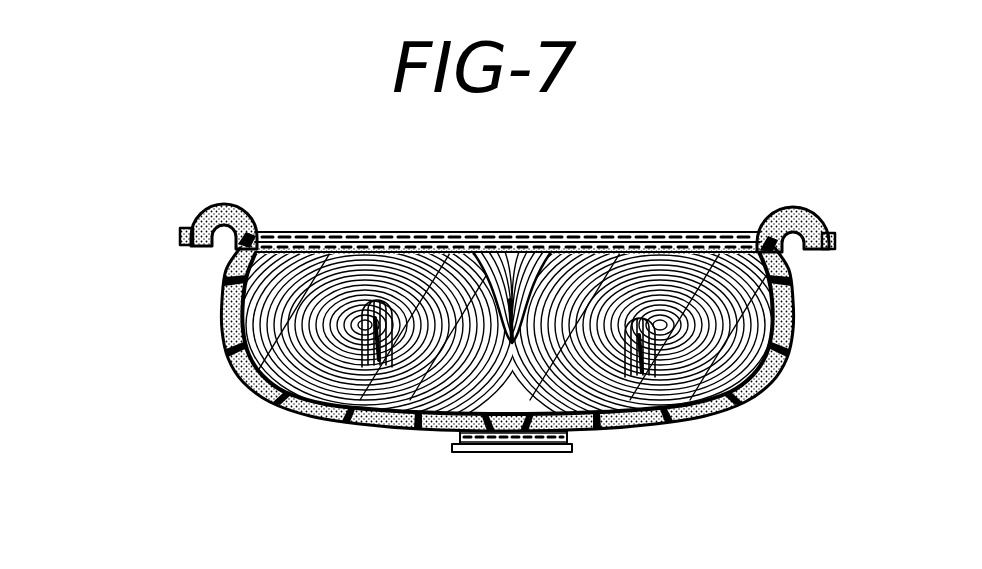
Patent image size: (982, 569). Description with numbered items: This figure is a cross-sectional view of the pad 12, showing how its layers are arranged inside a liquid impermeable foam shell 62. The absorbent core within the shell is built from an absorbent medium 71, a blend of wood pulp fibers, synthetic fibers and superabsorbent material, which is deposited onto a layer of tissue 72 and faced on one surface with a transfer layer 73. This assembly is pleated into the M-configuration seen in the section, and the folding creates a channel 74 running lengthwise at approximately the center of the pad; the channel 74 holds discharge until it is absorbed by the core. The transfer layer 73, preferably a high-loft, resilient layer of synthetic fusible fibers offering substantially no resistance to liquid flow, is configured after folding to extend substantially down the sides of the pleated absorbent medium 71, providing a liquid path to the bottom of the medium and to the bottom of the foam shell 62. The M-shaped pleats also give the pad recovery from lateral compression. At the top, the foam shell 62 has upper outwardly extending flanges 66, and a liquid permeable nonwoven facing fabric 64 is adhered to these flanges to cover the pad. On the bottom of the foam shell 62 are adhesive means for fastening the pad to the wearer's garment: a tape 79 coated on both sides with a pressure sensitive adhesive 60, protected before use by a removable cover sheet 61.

The pad 12 is at (148, 195).
The pressure sensitive adhesive 60 is at (447, 435).
The removable cover sheet 61 is at (467, 455).
The liquid impermeable foam shell 62 is at (700, 420).
The liquid permeable nonwoven facing fabric 64 is at (392, 232).
The upper outwardly extending flanges 66 is at (226, 203).
The absorbent medium 71 is at (273, 324).
The layer of tissue 72 is at (333, 413).
The transfer layer 73 is at (662, 255).
The channel 74 is at (512, 262).
The tape 79 is at (570, 440).